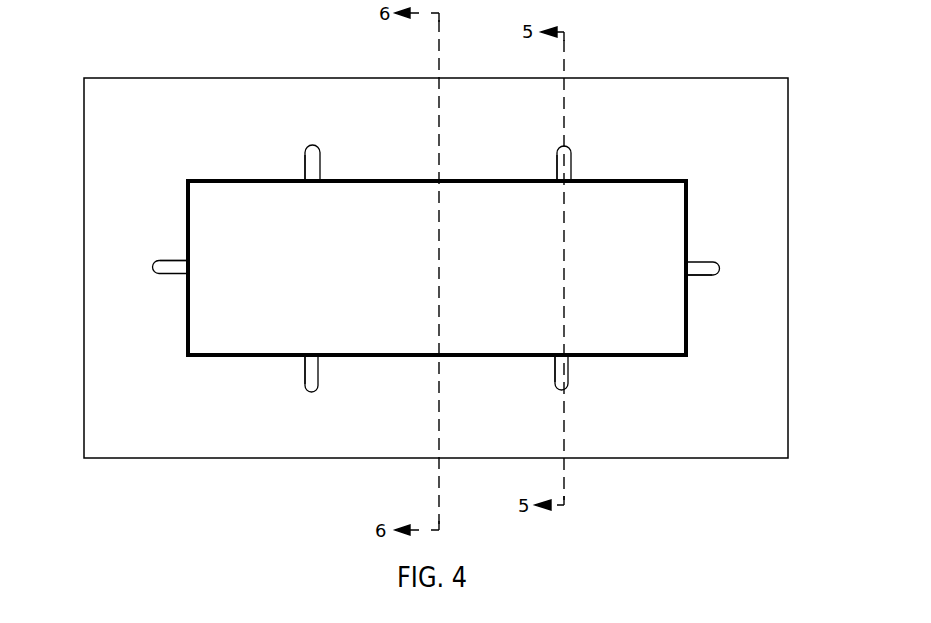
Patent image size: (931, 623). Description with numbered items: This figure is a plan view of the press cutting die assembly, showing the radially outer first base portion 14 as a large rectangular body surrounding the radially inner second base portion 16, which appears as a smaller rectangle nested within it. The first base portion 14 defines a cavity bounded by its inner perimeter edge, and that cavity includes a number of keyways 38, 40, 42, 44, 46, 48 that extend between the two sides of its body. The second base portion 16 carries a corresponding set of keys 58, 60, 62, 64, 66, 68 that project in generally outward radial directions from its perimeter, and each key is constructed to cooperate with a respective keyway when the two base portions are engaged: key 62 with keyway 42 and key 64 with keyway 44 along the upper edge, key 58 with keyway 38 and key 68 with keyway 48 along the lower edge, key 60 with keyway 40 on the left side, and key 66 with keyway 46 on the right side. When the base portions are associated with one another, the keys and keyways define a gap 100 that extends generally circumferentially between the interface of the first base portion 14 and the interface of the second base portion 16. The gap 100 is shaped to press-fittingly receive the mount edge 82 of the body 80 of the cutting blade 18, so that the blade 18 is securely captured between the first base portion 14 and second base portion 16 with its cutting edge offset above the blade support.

The gap 100 is at (657, 178).
The first base portion 14 is at (418, 144).
The second base portion 16 is at (393, 267).
The cutting blade 18 is at (402, 354).
The blade body 80 is at (206, 177).
The mount edge 82 is at (208, 360).
The keyway 42 is at (322, 153).
The key 62 is at (305, 156).
The keyway 44 is at (573, 153).
The key 64 is at (557, 156).
The keyway 38 is at (318, 386).
The key 58 is at (305, 380).
The keyway 48 is at (567, 386).
The key 68 is at (555, 380).
The keyway 40 is at (167, 276).
The key 60 is at (158, 265).
The keyway 46 is at (720, 263).
The key 66 is at (707, 276).